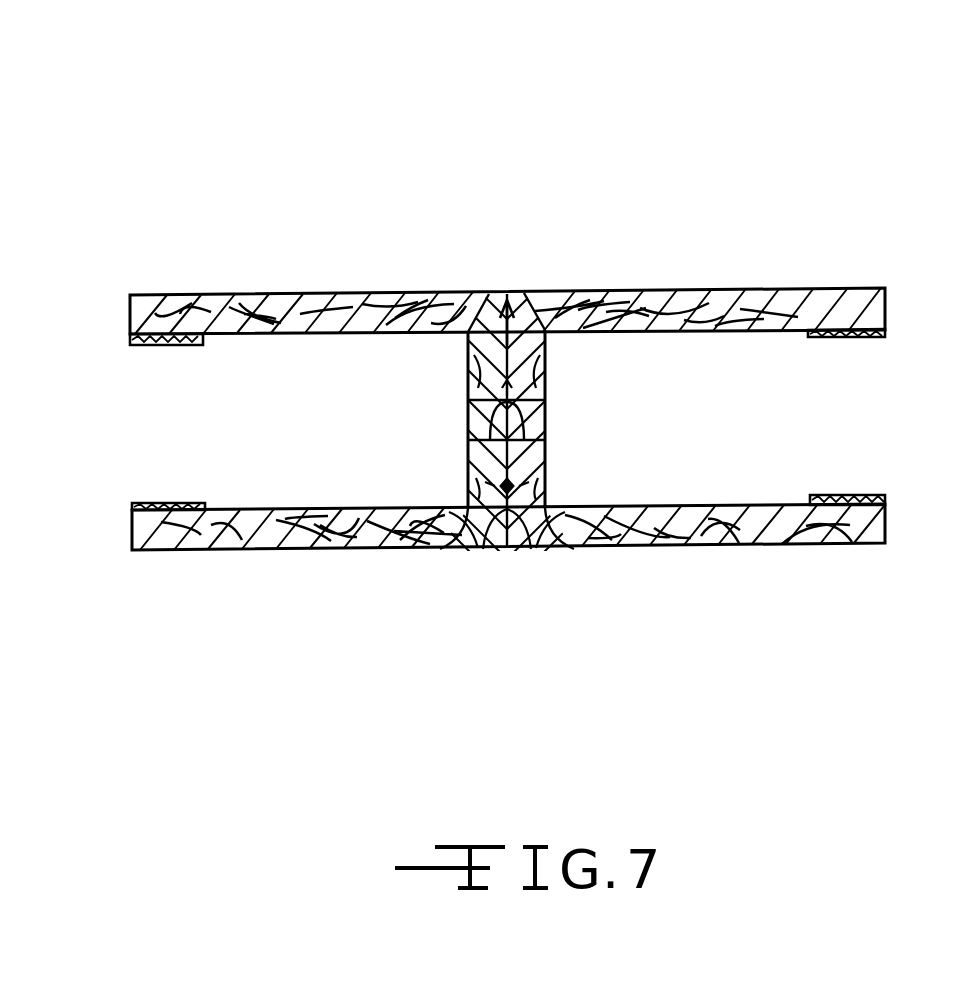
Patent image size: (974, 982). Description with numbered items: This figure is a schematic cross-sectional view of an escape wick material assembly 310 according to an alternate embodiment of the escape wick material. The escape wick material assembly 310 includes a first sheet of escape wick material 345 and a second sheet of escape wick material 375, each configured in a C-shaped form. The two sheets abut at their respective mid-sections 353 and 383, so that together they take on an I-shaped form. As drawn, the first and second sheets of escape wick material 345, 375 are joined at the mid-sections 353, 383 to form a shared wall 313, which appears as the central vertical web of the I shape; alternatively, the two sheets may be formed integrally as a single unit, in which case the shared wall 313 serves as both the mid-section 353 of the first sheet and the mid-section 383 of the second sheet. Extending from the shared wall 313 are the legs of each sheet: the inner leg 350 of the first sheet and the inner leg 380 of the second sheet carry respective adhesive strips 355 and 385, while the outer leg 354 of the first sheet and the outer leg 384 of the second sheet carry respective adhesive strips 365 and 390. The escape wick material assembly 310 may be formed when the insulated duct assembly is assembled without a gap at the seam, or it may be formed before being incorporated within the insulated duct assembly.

The escape wick material assembly 310 is at (506, 156).
The shared wall 313 is at (468, 458).
The first sheet of escape wick material 345 is at (316, 252).
The inner leg 350 is at (420, 292).
The mid-section 353 is at (475, 418).
The outer leg 354 is at (423, 550).
The adhesive strip 355 is at (165, 345).
The adhesive strip 365 is at (165, 503).
The second sheet of escape wick material 375 is at (695, 253).
The inner leg 380 is at (570, 292).
The mid-section 383 is at (542, 420).
The outer leg 384 is at (583, 550).
The adhesive strip 385 is at (825, 337).
The adhesive strip 390 is at (835, 495).